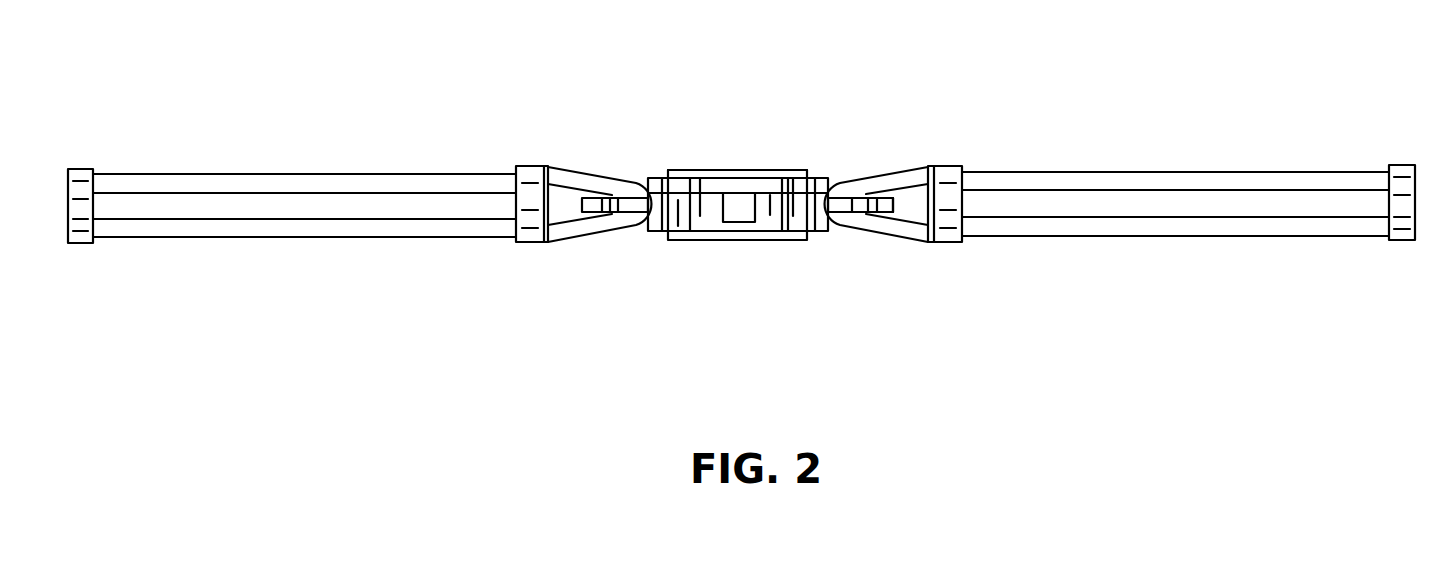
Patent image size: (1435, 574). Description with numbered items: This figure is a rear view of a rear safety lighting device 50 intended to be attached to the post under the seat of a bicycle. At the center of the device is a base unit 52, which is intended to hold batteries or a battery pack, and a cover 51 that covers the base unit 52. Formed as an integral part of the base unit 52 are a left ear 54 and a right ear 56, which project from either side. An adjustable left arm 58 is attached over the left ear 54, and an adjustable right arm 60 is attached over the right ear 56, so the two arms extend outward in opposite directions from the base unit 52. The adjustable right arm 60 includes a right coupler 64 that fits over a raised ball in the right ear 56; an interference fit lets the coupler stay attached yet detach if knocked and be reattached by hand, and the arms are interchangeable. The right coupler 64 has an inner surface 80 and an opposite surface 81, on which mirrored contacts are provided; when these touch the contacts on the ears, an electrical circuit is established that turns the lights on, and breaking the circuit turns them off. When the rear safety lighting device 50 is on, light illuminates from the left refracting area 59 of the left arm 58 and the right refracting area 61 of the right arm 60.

The rear safety lighting device 50 is at (903, 125).
The cover 51 is at (685, 178).
The base unit 52 is at (783, 231).
The left ear 54 is at (617, 215).
The right ear 56 is at (863, 212).
The adjustable left arm 58 is at (292, 167).
The left refracting area 59 is at (333, 203).
The adjustable right arm 60 is at (1227, 172).
The right refracting area 61 is at (1208, 205).
The right coupler 64 is at (917, 240).
The inner surface of coupler 80 is at (882, 214).
The opposite surface of coupler 81 is at (887, 197).